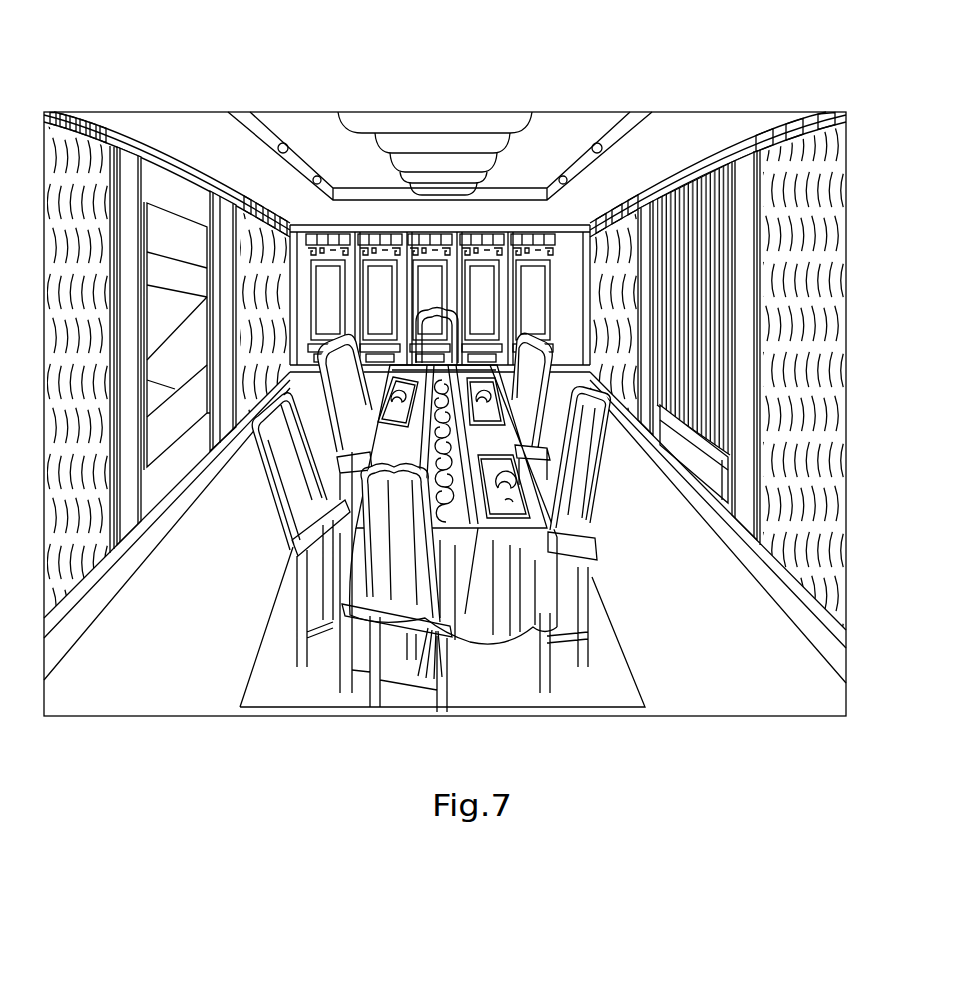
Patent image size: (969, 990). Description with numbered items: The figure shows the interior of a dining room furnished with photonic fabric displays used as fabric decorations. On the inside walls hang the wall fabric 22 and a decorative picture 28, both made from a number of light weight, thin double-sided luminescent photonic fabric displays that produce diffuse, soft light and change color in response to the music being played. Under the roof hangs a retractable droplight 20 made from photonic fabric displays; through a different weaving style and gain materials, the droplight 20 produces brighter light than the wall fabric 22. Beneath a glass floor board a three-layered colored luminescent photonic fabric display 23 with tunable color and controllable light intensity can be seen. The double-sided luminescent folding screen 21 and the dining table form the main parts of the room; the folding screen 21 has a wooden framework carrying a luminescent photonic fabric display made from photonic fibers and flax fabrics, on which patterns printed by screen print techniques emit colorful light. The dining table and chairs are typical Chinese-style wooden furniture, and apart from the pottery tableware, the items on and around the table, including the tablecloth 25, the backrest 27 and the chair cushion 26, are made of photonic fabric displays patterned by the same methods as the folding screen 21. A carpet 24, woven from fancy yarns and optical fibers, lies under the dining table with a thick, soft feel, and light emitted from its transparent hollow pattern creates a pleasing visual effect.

The retractable droplight 20 is at (494, 148).
The double-sided luminescent folding screen 21 is at (537, 245).
The wall fabric 22 is at (817, 527).
The three-layered colored luminescent photonic fabric display 23 is at (770, 668).
The carpet 24 is at (612, 665).
The tablecloth 25 is at (500, 577).
The chair cushion 26 is at (343, 570).
The backrest 27 is at (297, 480).
The decorative picture 28 is at (165, 412).